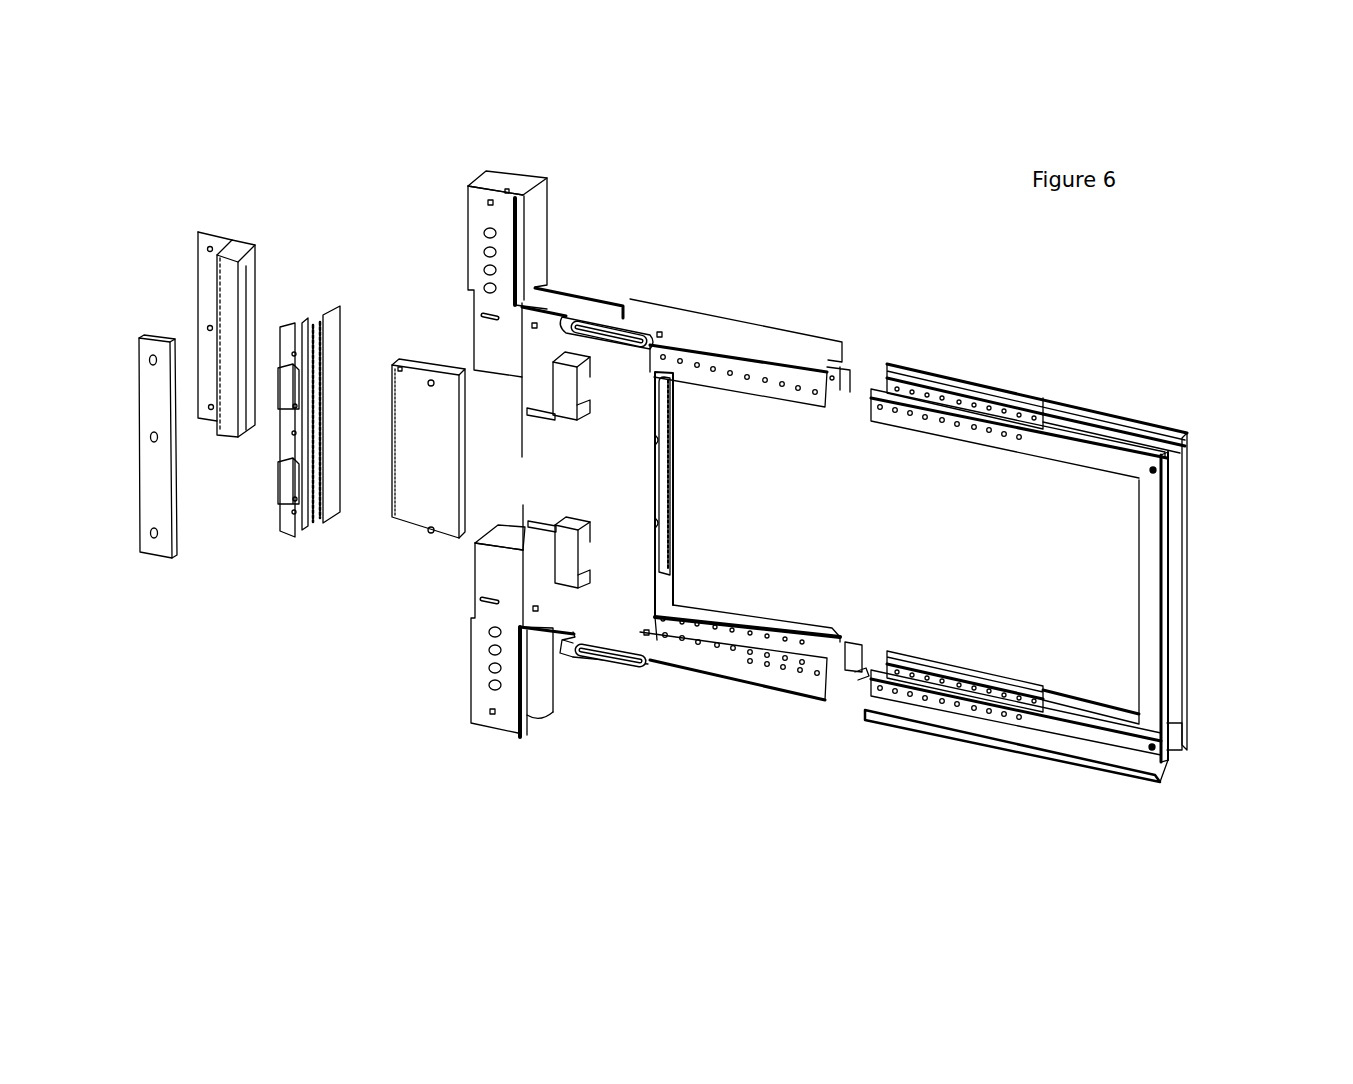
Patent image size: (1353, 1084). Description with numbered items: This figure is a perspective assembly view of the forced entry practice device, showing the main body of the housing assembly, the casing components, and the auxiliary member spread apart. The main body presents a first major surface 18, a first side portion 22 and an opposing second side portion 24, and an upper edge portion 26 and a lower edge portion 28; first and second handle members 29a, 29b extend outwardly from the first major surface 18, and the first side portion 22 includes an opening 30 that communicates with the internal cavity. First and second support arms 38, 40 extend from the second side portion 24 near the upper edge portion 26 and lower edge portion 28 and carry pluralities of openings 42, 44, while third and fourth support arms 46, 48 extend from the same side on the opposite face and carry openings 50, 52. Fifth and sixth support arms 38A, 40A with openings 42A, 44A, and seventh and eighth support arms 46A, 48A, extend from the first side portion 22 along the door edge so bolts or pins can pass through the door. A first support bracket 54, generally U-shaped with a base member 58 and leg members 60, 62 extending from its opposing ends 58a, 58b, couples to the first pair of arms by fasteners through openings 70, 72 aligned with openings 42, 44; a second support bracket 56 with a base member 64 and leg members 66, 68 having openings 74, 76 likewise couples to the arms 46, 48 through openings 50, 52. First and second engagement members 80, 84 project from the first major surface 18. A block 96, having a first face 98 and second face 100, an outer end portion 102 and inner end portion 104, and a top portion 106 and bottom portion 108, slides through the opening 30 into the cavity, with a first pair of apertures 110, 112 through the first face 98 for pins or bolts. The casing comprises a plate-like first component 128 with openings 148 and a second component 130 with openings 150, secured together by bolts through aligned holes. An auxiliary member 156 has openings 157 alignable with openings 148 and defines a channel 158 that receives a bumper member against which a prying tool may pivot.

The first major surface 18 is at (687, 494).
The first side portion 22 is at (541, 685).
The second side portion 24 is at (643, 528).
The upper edge portion 26 is at (619, 279).
The lower edge portion 28 is at (625, 696).
The first handle member 29a is at (601, 322).
The second handle member 29b is at (653, 667).
The opening 30 is at (506, 272).
The first support arm 38 is at (741, 407).
The fifth support arm 38A is at (502, 198).
The second support arm 40 is at (682, 734).
The sixth support arm 40A is at (520, 735).
The openings 42 is at (696, 372).
The openings 42A is at (485, 226).
The openings 44 is at (700, 649).
The openings 44A is at (494, 694).
The third support arm 46 is at (723, 299).
The seventh support arm 46A is at (536, 184).
The fourth support arm 48 is at (776, 627).
The eighth support arm 48A is at (550, 709).
The openings 50 is at (841, 372).
The openings 52 is at (851, 647).
The first support bracket 54 is at (1070, 768).
The second support bracket 56 is at (1074, 571).
The base member 58 is at (1147, 630).
The end of base member 58a is at (1160, 473).
The end of base member 58b is at (1156, 752).
The leg member 60 is at (1019, 448).
The leg member 62 is at (1016, 741).
The base member 64 is at (1178, 604).
The leg member 66 is at (1070, 403).
The leg member 68 is at (1010, 682).
The openings 70 is at (896, 414).
The openings 72 is at (894, 693).
The openings 74 is at (920, 399).
The openings 76 is at (926, 674).
The first engagement member 80 is at (576, 388).
The second engagement member 84 is at (574, 563).
The block 96 is at (429, 446).
The first face 98 is at (409, 406).
The second face 100 is at (423, 359).
The outer end portion 102 is at (395, 455).
The inner end portion 104 is at (463, 494).
The top portion 106 is at (402, 362).
The bottom portion 108 is at (405, 528).
The aperture 110 is at (431, 377).
The aperture 112 is at (421, 533).
The first component 128 is at (140, 491).
The second component 130 is at (274, 469).
The openings 148 is at (152, 527).
The openings 150 is at (291, 440).
The auxiliary member 156 is at (193, 302).
The openings 157 is at (206, 246).
The channel 158 is at (234, 320).